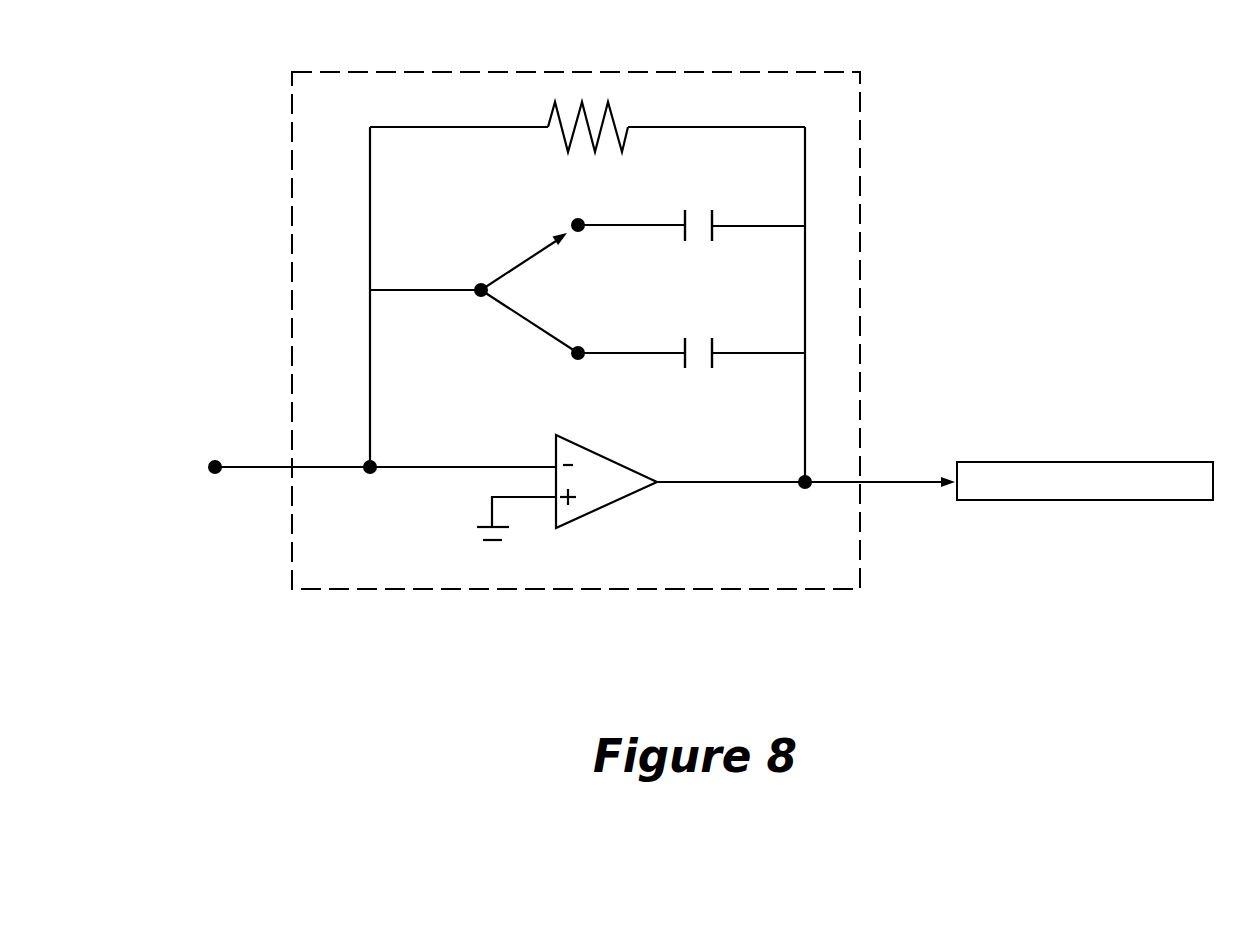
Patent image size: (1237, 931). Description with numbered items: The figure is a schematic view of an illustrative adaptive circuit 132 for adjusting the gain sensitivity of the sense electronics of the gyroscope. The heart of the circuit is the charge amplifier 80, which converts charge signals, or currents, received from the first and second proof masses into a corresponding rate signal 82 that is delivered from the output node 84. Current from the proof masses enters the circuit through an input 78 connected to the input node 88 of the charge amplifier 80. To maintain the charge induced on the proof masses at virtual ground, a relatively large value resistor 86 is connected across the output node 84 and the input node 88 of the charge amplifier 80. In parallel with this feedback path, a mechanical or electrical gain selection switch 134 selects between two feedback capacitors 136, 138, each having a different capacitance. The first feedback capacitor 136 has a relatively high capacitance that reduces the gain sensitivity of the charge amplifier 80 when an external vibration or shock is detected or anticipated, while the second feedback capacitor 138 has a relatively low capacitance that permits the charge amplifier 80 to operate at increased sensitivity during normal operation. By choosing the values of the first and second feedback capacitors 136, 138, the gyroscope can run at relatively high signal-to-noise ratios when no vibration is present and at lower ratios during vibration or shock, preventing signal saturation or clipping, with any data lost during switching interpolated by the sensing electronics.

The adaptive circuit 132 is at (778, 52).
The charge amplifier 80 is at (860, 268).
The resistor 86 is at (580, 105).
The gain selection switch 134 is at (497, 240).
The first feedback capacitor 136 is at (712, 214).
The second feedback capacitor 138 is at (712, 343).
The input node 78 is at (212, 460).
The input node 88 is at (370, 470).
The output node 84 is at (805, 482).
The rate signal 82 is at (1130, 462).